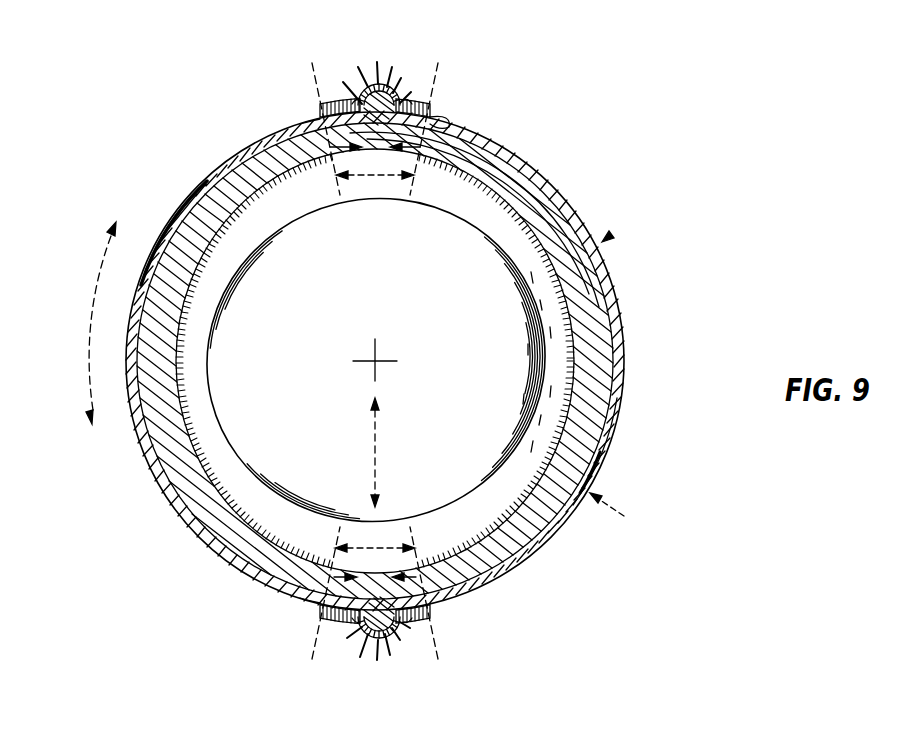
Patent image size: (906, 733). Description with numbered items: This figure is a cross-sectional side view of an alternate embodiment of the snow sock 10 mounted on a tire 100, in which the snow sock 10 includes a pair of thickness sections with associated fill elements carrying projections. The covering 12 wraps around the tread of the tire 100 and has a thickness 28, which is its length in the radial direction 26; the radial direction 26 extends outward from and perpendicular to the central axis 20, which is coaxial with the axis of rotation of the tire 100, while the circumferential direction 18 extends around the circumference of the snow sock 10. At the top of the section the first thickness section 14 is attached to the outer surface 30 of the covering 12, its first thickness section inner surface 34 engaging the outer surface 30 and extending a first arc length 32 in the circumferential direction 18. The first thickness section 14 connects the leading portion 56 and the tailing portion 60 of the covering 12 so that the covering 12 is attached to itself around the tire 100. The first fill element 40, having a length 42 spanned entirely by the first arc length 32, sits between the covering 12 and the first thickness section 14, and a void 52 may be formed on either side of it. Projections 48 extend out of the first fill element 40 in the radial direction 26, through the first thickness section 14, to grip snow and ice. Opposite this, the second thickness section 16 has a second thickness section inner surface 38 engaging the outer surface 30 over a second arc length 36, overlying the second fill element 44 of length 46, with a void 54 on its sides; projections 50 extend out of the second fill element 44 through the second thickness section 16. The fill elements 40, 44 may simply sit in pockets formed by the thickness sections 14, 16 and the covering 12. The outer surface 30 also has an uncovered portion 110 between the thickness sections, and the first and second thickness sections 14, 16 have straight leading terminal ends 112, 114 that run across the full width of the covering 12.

The snow sock 10 is at (563, 192).
The covering 12 is at (625, 338).
The first thickness section 14 is at (322, 108).
The second thickness section 16 is at (430, 616).
The circumferential direction 18 is at (88, 332).
The central axis 20 is at (381, 357).
The radial direction 26 is at (384, 464).
The thickness 28 is at (624, 515).
The outer surface 30 is at (610, 236).
The first arc length 32 is at (369, 183).
The first thickness section inner surface 34 is at (437, 120).
The second arc length 36 is at (366, 548).
The second thickness section inner surface 38 is at (325, 602).
The first fill element 40 is at (379, 84).
The length 42 is at (336, 160).
The second fill element 44 is at (369, 640).
The length 46 is at (410, 565).
The projections 48 is at (358, 79).
The projections 50 is at (363, 643).
The void 52 is at (347, 86).
The void 54 is at (355, 622).
The leading portion 56 is at (334, 136).
The tailing portion 60 is at (440, 136).
The tire 100 is at (543, 413).
The uncovered portion 110 is at (623, 410).
The leading terminal end 112 is at (432, 115).
The leading terminal end 114 is at (322, 611).